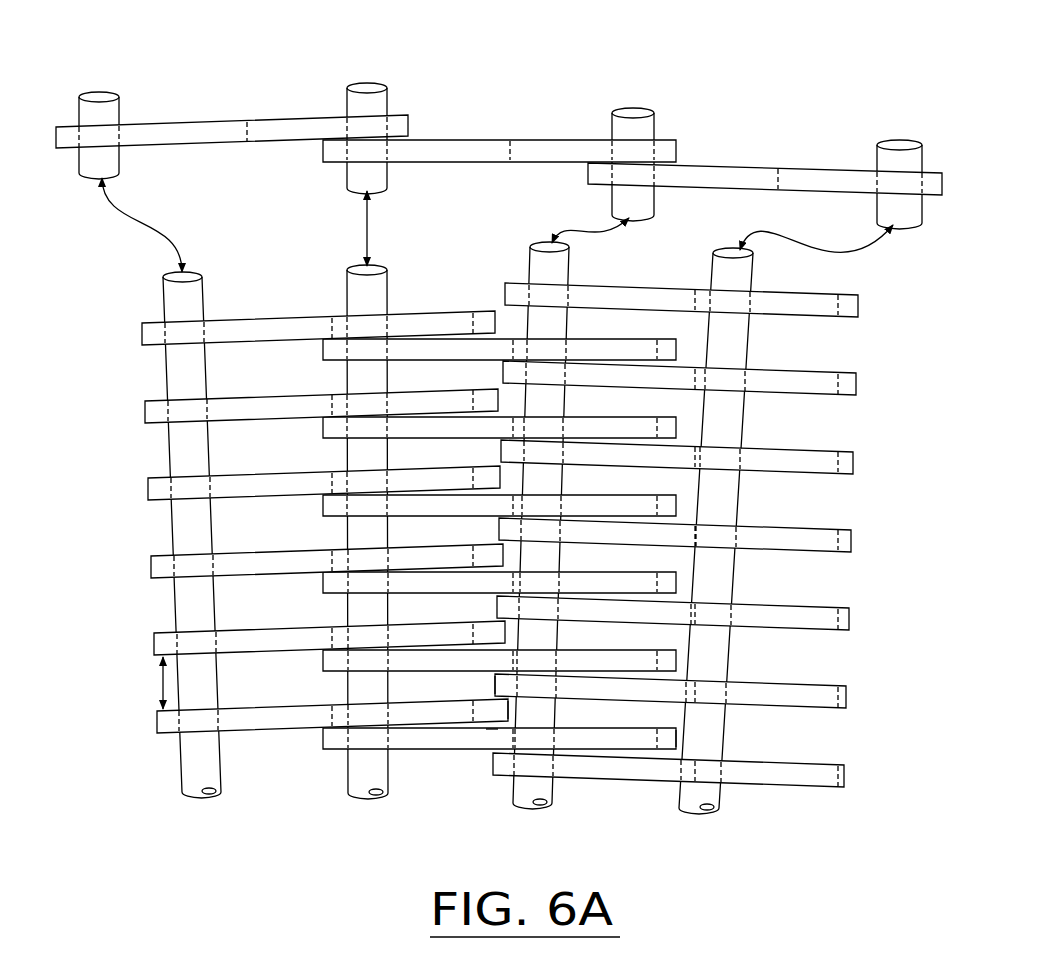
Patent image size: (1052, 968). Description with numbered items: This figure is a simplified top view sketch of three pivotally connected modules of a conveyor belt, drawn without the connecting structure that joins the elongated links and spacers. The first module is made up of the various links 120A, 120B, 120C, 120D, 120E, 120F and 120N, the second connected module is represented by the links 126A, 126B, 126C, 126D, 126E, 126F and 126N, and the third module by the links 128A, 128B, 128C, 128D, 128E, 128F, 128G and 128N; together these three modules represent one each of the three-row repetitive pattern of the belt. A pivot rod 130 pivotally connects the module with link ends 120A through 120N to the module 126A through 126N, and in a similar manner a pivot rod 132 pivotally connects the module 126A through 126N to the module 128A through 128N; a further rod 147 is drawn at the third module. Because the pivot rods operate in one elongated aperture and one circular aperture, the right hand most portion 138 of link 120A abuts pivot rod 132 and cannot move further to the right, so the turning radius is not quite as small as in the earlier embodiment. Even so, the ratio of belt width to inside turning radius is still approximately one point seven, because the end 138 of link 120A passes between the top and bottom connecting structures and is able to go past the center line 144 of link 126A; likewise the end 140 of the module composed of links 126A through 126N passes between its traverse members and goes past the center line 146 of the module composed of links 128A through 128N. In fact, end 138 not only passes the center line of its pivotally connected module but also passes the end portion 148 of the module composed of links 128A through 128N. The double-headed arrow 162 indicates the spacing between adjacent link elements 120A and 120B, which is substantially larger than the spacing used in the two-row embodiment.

The link 120N is at (57, 133).
The link 126N is at (323, 150).
The link 128N is at (943, 172).
The link 120F is at (142, 332).
The link 120E is at (145, 410).
The link 120D is at (148, 487).
The link 120C is at (151, 565).
The link 120B is at (154, 642).
The link 120A is at (286, 754).
The link 126F is at (323, 349).
The link 126E is at (323, 427).
The link 126D is at (323, 505).
The link 126C is at (323, 582).
The link 126B is at (323, 660).
The link 126A is at (450, 786).
The link 128G is at (858, 306).
The link 128F is at (856, 384).
The link 128E is at (853, 463).
The link 128D is at (851, 541).
The link 128C is at (849, 619).
The link 128B is at (675, 685).
The link 128A is at (726, 799).
The pivot rod 130 is at (370, 797).
The pivot rod 132 is at (527, 805).
The support rod 147 is at (708, 810).
The center line 146 is at (672, 767).
The end portion 148 is at (492, 681).
The right hand most portion 138 is at (497, 711).
The end 140 is at (670, 737).
The center line 144 is at (493, 736).
The double-headed arrow 162 is at (158, 680).